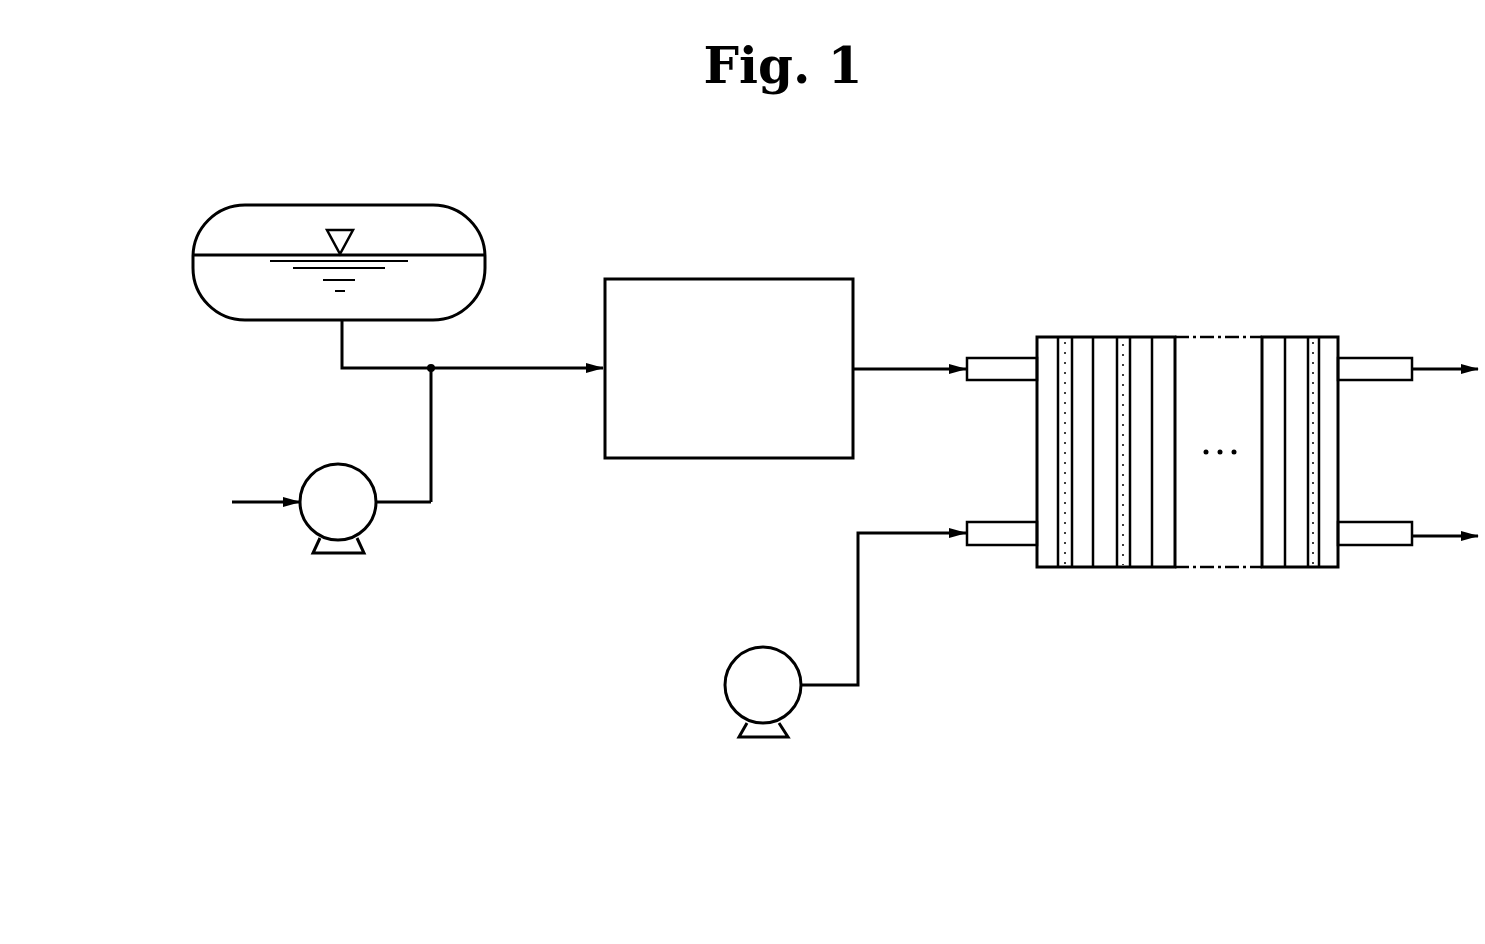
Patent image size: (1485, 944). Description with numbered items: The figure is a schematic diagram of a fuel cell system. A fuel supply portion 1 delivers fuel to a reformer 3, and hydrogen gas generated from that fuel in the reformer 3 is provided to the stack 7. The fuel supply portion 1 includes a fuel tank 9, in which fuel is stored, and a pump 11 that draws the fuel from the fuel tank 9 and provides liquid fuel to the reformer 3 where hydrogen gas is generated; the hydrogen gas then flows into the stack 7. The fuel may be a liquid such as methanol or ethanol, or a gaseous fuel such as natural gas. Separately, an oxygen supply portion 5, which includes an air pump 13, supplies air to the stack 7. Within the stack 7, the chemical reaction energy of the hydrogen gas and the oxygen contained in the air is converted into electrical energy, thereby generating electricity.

The fuel supply portion 1 is at (168, 268).
The reformer 3 is at (717, 279).
The oxygen supply portion 5 is at (727, 655).
The stack 7 is at (1262, 325).
The fuel tank 9 is at (320, 205).
The pump 11 is at (352, 464).
The air pump 13 is at (779, 648).